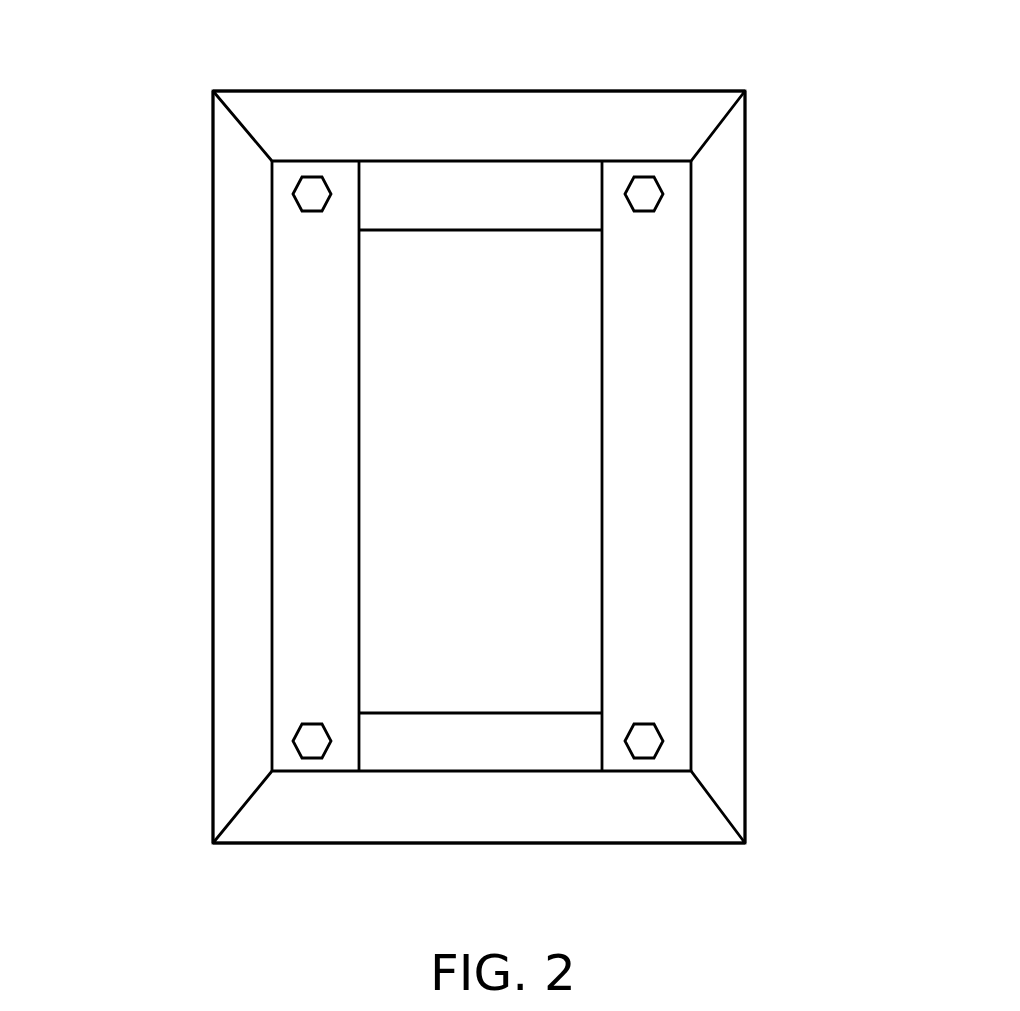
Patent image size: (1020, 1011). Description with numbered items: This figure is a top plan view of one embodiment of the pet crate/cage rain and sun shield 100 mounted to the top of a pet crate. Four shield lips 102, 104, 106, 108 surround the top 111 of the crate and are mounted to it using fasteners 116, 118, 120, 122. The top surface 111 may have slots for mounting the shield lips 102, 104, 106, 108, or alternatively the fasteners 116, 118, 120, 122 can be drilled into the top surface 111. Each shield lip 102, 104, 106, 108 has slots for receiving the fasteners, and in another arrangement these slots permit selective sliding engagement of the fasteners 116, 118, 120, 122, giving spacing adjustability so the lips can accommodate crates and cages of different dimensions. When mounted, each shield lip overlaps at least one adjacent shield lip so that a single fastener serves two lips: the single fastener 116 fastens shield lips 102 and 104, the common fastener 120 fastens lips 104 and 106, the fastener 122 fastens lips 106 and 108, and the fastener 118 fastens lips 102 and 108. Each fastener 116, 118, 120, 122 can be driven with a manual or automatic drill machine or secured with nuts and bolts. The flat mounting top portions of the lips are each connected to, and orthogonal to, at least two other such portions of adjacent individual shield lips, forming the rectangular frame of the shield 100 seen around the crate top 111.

The pet crate/cage rain and sun shield 100 is at (165, 106).
The shield lip 102 is at (213, 534).
The shield lip 104 is at (458, 91).
The shield lip 106 is at (748, 407).
The shield lip 108 is at (528, 843).
The top of pet crate 111 is at (513, 552).
The fastener 116 is at (320, 194).
The fastener 118 is at (320, 741).
The fastener 120 is at (650, 194).
The fastener 122 is at (650, 741).